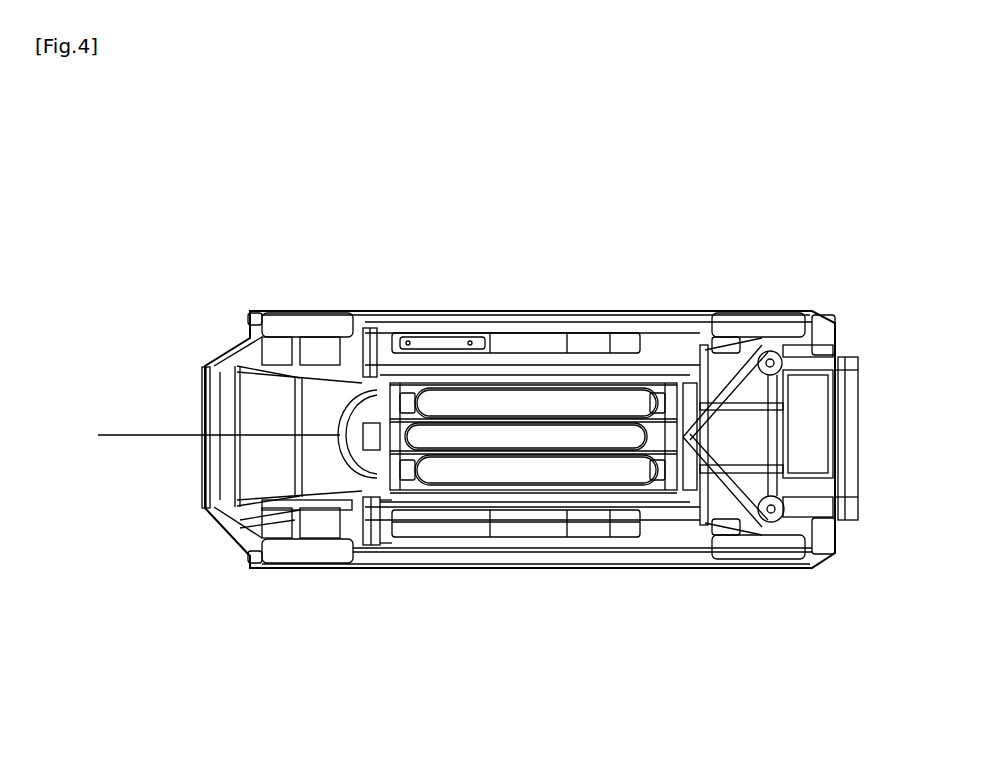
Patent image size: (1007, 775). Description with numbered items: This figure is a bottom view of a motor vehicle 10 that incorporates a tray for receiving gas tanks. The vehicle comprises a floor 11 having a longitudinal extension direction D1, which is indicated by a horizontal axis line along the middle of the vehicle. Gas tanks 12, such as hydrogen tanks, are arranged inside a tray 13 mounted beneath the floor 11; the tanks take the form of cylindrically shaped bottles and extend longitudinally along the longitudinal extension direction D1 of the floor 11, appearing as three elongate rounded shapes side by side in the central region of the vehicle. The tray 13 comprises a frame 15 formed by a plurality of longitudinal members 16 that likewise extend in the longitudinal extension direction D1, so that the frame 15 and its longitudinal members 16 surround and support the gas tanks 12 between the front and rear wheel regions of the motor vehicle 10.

The motor vehicle 10 is at (233, 242).
The floor 11 is at (435, 333).
The gas tanks 12 is at (572, 400).
The tray 13 is at (632, 370).
The frame 15 is at (387, 490).
The longitudinal members 16 is at (347, 535).
The longitudinal extension direction D1 is at (137, 432).